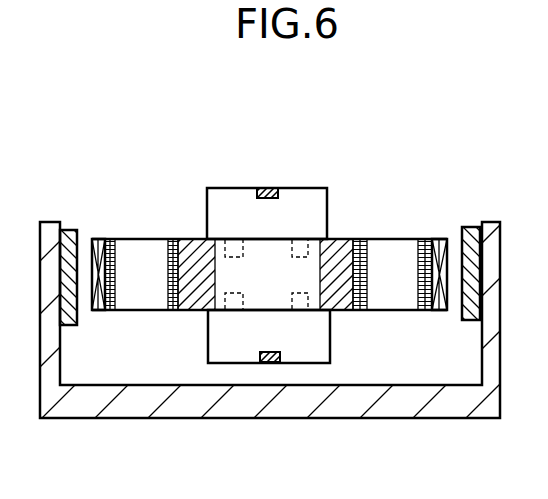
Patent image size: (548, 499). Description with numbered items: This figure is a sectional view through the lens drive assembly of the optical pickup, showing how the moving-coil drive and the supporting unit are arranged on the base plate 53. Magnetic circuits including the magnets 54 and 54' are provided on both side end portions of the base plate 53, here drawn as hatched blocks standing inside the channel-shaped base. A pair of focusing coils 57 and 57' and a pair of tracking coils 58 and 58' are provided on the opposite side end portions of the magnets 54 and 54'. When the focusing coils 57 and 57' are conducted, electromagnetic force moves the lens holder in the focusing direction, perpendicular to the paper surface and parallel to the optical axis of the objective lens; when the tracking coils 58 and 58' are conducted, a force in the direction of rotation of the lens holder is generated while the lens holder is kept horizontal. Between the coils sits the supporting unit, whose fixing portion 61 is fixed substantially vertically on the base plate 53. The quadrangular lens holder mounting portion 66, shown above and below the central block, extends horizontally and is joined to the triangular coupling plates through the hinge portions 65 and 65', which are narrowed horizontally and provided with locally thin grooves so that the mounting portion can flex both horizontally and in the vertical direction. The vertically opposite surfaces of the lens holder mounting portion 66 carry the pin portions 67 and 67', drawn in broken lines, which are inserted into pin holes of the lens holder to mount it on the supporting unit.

The base plate 53 is at (333, 398).
The magnet 54 is at (483, 240).
The magnet 54' is at (57, 241).
The focusing coil 57 is at (392, 243).
The focusing coil 57' is at (141, 243).
The tracking coil 58 is at (431, 227).
The tracking coil 58' is at (103, 227).
The fixing portion 61 is at (195, 243).
The hinge portion 65 is at (269, 153).
The hinge portion 65' is at (271, 409).
The lens holder mounting portion 66 is at (303, 208).
The pin portion 67 is at (299, 229).
The pin portion 67' is at (225, 321).